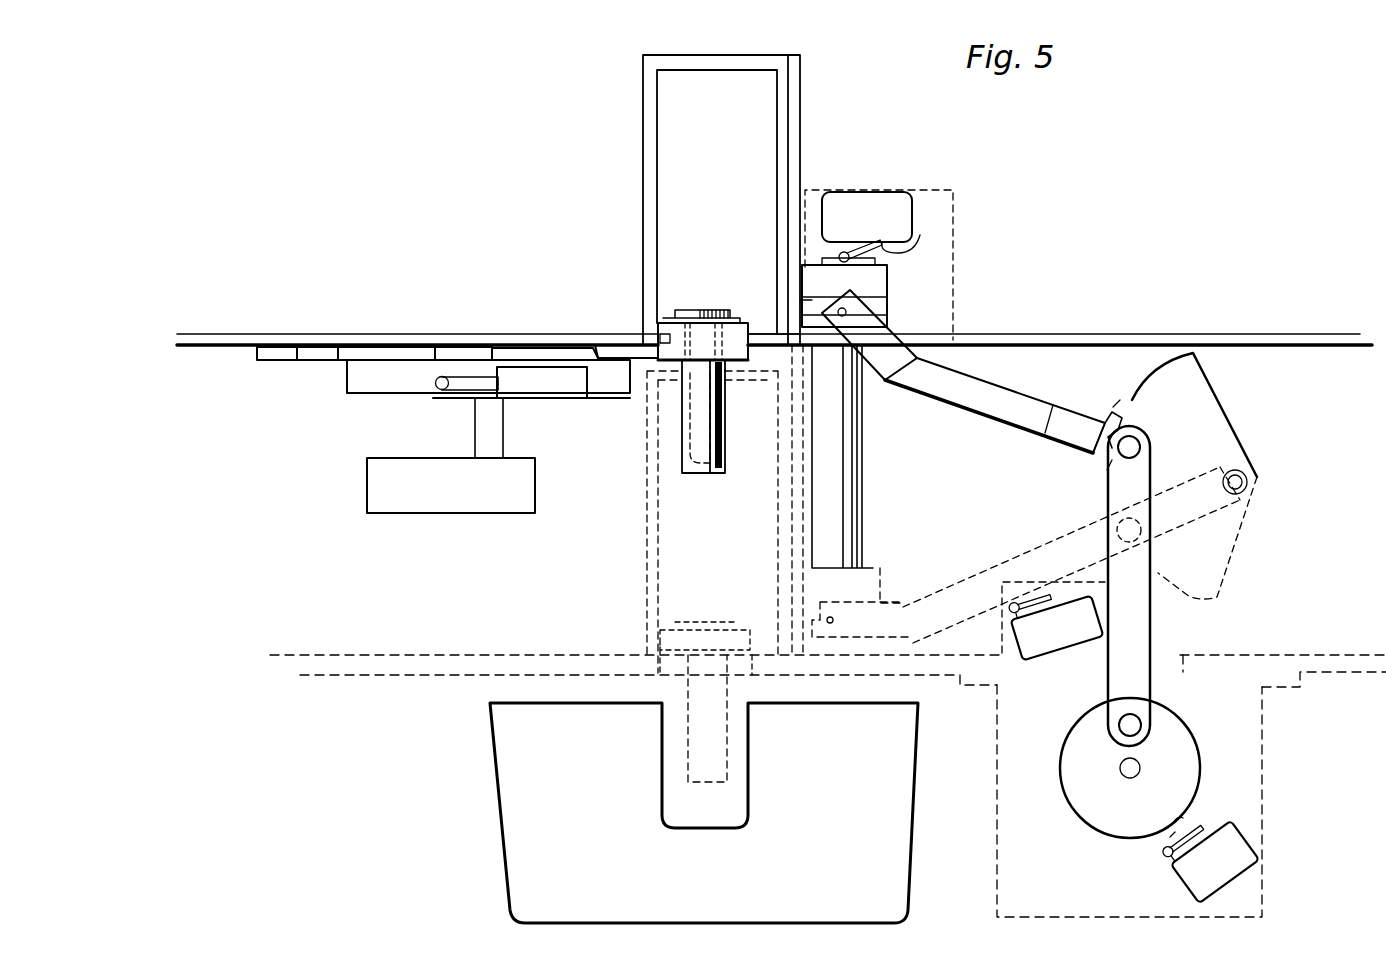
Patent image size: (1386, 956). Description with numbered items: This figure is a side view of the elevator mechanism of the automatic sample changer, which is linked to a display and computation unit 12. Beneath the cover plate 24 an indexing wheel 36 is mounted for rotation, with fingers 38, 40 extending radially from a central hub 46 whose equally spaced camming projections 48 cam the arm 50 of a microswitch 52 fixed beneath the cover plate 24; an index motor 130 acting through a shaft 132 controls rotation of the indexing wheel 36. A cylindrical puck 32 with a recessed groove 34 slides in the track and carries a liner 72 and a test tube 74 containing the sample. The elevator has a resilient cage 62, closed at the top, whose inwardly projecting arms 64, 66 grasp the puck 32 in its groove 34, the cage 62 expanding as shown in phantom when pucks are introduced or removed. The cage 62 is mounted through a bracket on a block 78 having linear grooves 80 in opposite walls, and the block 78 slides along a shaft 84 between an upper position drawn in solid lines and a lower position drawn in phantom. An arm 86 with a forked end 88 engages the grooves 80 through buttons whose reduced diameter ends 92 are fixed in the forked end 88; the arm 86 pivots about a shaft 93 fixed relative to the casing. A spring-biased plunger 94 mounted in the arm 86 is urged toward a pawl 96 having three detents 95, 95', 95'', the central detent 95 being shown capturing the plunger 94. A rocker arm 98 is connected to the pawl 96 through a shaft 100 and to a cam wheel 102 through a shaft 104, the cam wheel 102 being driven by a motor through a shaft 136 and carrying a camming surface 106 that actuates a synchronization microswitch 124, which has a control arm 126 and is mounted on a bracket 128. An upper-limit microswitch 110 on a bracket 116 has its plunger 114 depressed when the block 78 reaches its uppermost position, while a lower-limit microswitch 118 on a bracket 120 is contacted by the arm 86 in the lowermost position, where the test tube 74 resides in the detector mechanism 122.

The display and computation unit 12 is at (914, 228).
The cover plate 24 is at (248, 340).
The puck 32 is at (737, 370).
The groove 34 is at (670, 338).
The indexing wheel 36 is at (432, 328).
The finger 38 is at (590, 345).
The finger 40 is at (296, 352).
The central hub 46 is at (506, 354).
The camming projections 48 is at (435, 390).
The arm of microswitch 50 is at (467, 379).
The microswitch 52 is at (562, 378).
The cage 62 is at (700, 60).
The arm 64 is at (763, 337).
The arm 66 is at (672, 350).
The liner 72 is at (702, 476).
The test tube 74 is at (683, 443).
The block 78 is at (872, 281).
The linear grooves 80 is at (807, 307).
The shaft 84 is at (840, 523).
The arm 86 is at (995, 375).
The forked end 88 is at (878, 382).
The reduced diameter ends 92 is at (848, 316).
The shaft 93 is at (1250, 486).
The plunger 94 is at (1092, 436).
The detent 95 is at (1142, 418).
The detent 95' is at (1096, 386).
The detent 95'' is at (1078, 486).
The pawl 96 is at (1203, 410).
The rocker arm 98 is at (1127, 632).
The shaft 100 is at (1142, 441).
The cam wheel 102 is at (1167, 747).
The shaft 104 is at (1150, 718).
The camming surface 106 is at (1097, 707).
The upper-limit microswitch 110 is at (883, 200).
The plunger 114 is at (845, 249).
The bracket 116 is at (953, 225).
The lower-limit microswitch 118 is at (1052, 630).
The bracket 120 is at (1002, 642).
The detector mechanism 122 is at (528, 851).
The synchronization microswitch 124 is at (1230, 853).
The switch actuator 126 is at (1170, 837).
The bracket 128 is at (1015, 880).
The index motor 130 is at (433, 490).
The shaft 132 is at (490, 430).
The shaft 136 is at (1125, 768).